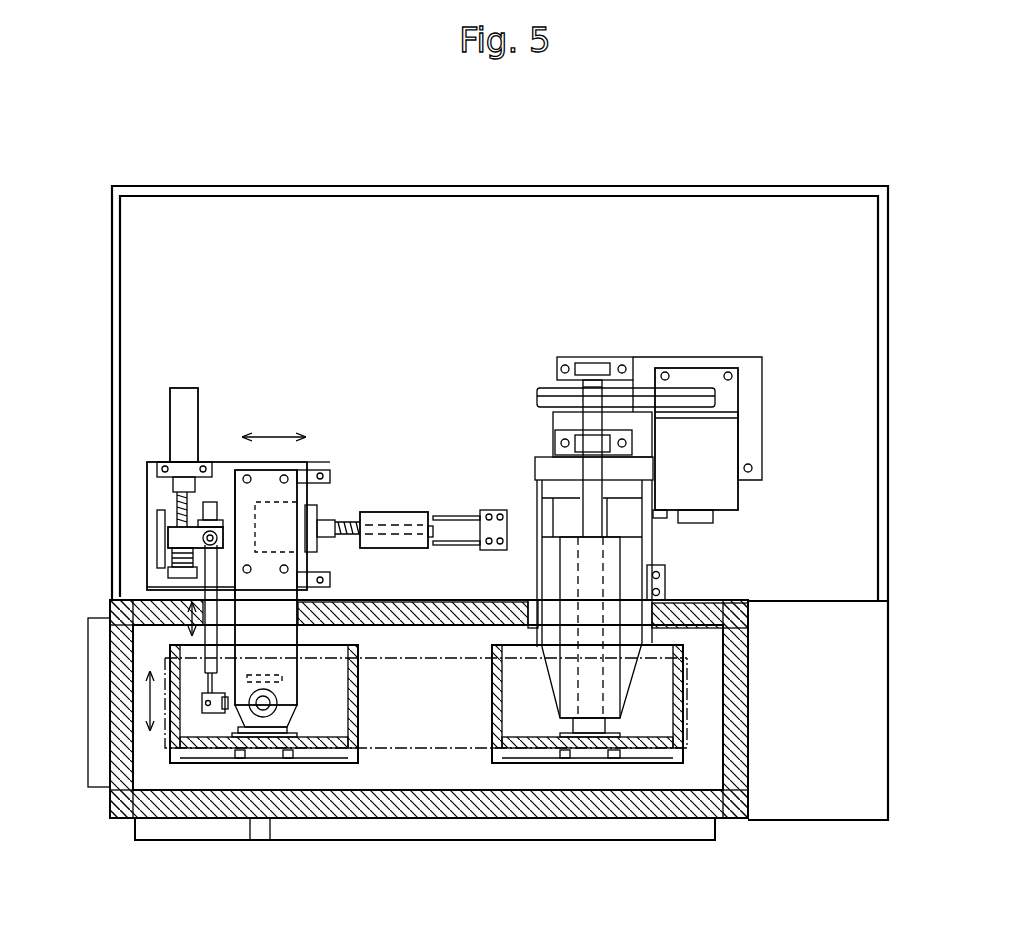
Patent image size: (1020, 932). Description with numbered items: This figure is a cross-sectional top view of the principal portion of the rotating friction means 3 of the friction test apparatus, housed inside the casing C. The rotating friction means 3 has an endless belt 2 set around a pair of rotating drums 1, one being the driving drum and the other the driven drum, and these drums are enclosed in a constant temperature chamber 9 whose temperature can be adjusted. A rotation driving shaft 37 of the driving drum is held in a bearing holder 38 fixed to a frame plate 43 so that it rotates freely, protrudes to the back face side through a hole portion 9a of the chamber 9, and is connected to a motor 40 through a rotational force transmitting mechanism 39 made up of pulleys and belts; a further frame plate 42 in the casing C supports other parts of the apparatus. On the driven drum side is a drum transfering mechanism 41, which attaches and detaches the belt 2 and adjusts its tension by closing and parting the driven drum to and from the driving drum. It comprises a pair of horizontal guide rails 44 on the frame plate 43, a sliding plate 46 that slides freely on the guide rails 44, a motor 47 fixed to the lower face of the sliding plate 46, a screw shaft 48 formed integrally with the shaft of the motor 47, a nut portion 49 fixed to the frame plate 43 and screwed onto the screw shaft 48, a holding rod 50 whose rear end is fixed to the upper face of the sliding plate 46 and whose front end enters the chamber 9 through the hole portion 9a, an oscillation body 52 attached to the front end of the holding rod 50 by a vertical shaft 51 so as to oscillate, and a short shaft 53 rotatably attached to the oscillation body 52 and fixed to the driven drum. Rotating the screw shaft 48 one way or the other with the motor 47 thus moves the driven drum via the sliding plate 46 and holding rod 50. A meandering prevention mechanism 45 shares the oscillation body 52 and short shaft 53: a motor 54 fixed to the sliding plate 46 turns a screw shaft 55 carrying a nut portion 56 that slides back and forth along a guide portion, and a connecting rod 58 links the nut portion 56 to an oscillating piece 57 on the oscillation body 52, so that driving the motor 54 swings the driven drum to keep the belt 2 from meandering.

The casing C is at (692, 182).
The constant temperature chamber 9 is at (750, 705).
The hole portion 9a is at (305, 627).
The rotating drum 1 is at (318, 752).
The endless belt 2 is at (411, 752).
The rotating friction means 3 is at (703, 772).
The rotation driving shaft 37 is at (607, 590).
The bearing holder 38 is at (571, 536).
The rotational force transmitting mechanism 39 is at (540, 356).
The motor 40 is at (722, 438).
The drum transfering mechanism 41 is at (338, 465).
The frame plate 42 is at (210, 404).
The frame plate 43 is at (277, 346).
The guide rail 44 is at (324, 466).
The meandering prevention mechanism 45 is at (274, 396).
The sliding plate 46 is at (160, 487).
The motor 47 is at (318, 507).
The screw shaft 48 is at (345, 537).
The nut portion 49 is at (410, 508).
The holding rod 50 is at (285, 667).
The vertical shaft 51 is at (278, 703).
The oscillation body 52 is at (205, 714).
The short shaft 53 is at (262, 735).
The motor 54 is at (177, 388).
The screw shaft 55 is at (165, 523).
The nut portion 56 is at (185, 540).
The oscillating piece 57 is at (233, 716).
The connecting rod 58 is at (205, 582).